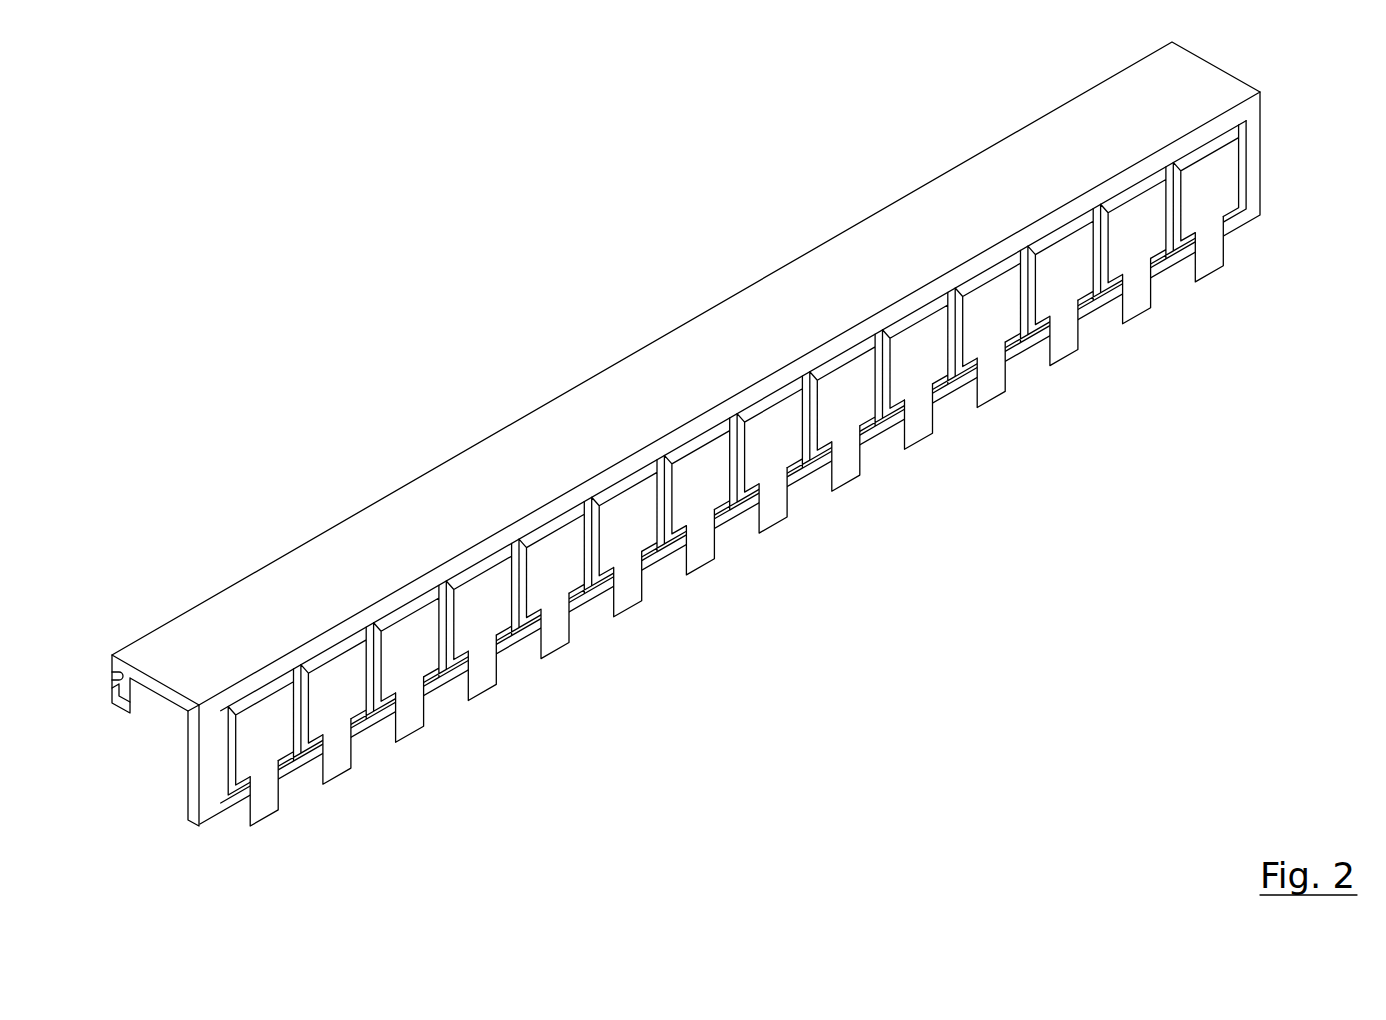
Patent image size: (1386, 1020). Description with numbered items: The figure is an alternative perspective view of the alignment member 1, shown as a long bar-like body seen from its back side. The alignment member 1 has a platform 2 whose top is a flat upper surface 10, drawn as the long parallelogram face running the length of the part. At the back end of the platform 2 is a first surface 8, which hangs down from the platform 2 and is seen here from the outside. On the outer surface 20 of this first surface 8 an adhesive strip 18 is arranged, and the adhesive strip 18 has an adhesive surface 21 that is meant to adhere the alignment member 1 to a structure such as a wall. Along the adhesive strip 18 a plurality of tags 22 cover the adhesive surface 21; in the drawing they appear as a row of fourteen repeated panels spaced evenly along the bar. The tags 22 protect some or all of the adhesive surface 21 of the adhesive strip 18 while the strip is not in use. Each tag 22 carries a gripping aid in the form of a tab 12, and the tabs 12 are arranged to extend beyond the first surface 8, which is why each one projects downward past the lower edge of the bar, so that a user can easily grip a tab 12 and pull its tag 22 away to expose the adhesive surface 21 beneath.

The alignment member 1 is at (711, 468).
The platform 2 is at (664, 480).
The first surface 8 is at (192, 810).
The flat upper surface 10 is at (152, 648).
The tab 12 is at (345, 667).
The adhesive strip 18 is at (700, 494).
The outer surface 20 is at (258, 798).
The adhesive surface 21 is at (228, 793).
The tag 22 is at (736, 536).